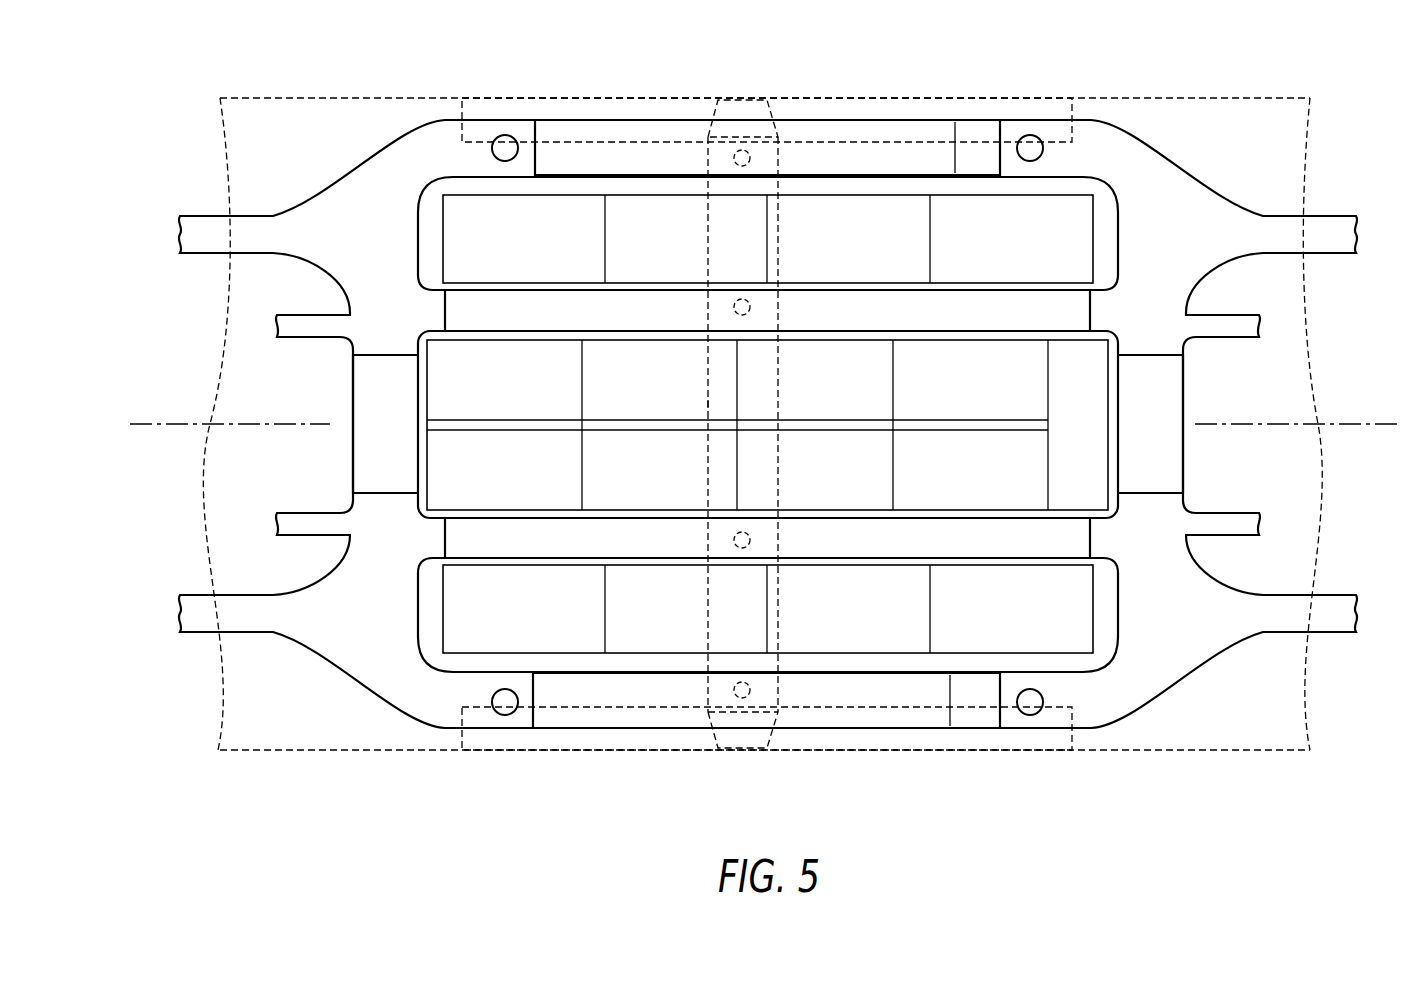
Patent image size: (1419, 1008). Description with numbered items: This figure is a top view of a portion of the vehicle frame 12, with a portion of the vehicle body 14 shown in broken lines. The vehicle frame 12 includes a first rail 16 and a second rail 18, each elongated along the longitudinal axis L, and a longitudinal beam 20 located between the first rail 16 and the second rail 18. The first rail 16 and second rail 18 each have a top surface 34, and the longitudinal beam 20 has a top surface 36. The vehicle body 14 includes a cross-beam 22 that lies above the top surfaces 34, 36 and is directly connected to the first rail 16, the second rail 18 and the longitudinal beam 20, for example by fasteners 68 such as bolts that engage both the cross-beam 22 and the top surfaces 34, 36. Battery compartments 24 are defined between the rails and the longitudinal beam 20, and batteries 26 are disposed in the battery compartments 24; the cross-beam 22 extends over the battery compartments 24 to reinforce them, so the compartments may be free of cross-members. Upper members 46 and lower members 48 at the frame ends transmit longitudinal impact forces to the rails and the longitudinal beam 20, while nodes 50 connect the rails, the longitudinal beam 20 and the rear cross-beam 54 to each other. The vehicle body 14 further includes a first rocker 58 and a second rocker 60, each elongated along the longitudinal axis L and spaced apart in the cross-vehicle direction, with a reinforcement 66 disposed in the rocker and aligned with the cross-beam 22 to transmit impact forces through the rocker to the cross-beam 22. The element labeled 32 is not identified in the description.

The vehicle frame 12 is at (571, 112).
The vehicle body 14 is at (360, 770).
The first rail 16 is at (950, 728).
The second rail 18 is at (955, 125).
The longitudinal beam 20 is at (985, 290).
The cross-beam 22 is at (708, 400).
The battery compartment 24 is at (438, 237).
The batteries 26 is at (470, 215).
The first end wall 32 is at (352, 402).
The top surface 34 is at (878, 135).
The top surface 36 is at (830, 310).
The upper members 46 is at (195, 212).
The lower members 48 is at (310, 312).
The nodes 50 is at (372, 182).
The rear cross-beam 54 is at (1186, 405).
The first rocker 58 is at (597, 735).
The second rocker 60 is at (655, 108).
The reinforcement 66 is at (738, 110).
The fasteners 68 is at (752, 152).
The longitudinal axis L is at (150, 420).